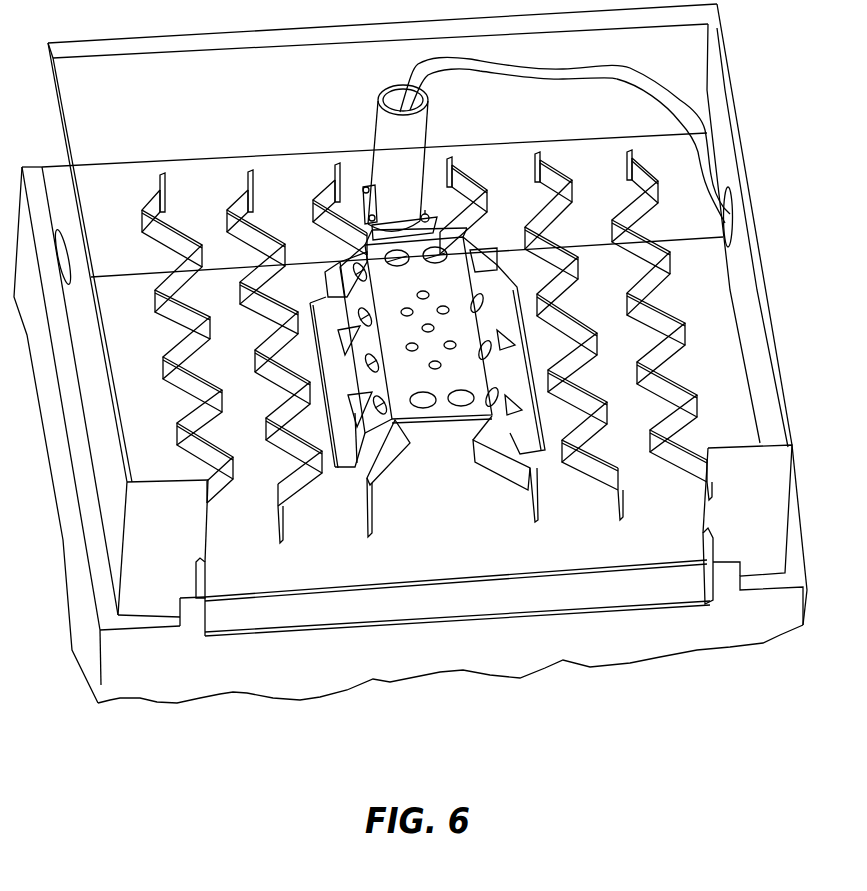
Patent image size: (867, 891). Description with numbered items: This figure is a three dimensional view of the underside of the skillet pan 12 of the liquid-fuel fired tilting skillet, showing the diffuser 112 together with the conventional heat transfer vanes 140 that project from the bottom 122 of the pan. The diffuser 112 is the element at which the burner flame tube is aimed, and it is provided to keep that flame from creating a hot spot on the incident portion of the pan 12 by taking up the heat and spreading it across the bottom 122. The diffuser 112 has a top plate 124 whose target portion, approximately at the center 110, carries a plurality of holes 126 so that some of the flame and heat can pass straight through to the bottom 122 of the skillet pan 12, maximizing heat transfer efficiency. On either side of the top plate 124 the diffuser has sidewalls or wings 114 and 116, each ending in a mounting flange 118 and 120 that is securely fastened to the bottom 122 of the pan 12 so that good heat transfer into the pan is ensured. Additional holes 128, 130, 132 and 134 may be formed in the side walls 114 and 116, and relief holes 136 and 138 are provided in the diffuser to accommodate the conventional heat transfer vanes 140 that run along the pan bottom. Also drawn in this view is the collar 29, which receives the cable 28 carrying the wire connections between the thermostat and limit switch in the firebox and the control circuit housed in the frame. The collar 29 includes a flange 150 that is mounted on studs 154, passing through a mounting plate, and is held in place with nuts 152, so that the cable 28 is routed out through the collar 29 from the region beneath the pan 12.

The skillet pan 12 is at (246, 677).
The cable 28 is at (630, 84).
The collar 29 is at (417, 142).
The center of diffuser 110 is at (430, 387).
The diffuser 112 is at (508, 272).
The sidewall 114 is at (368, 478).
The sidewall 116 is at (500, 458).
The mounting flange 118 is at (310, 303).
The mounting flange 120 is at (500, 268).
The bottom of pan 122 is at (600, 557).
The top plate 124 is at (425, 424).
The holes 126 is at (447, 341).
The additional hole 128 is at (378, 237).
The additional hole 130 is at (466, 404).
The additional hole 132 is at (358, 310).
The additional hole 134 is at (482, 305).
The relief hole 136 is at (347, 413).
The relief hole 138 is at (513, 345).
The heat transfer vanes 140 is at (335, 165).
The flange 150 is at (434, 212).
The nuts 152 is at (371, 212).
The studs 154 is at (366, 186).